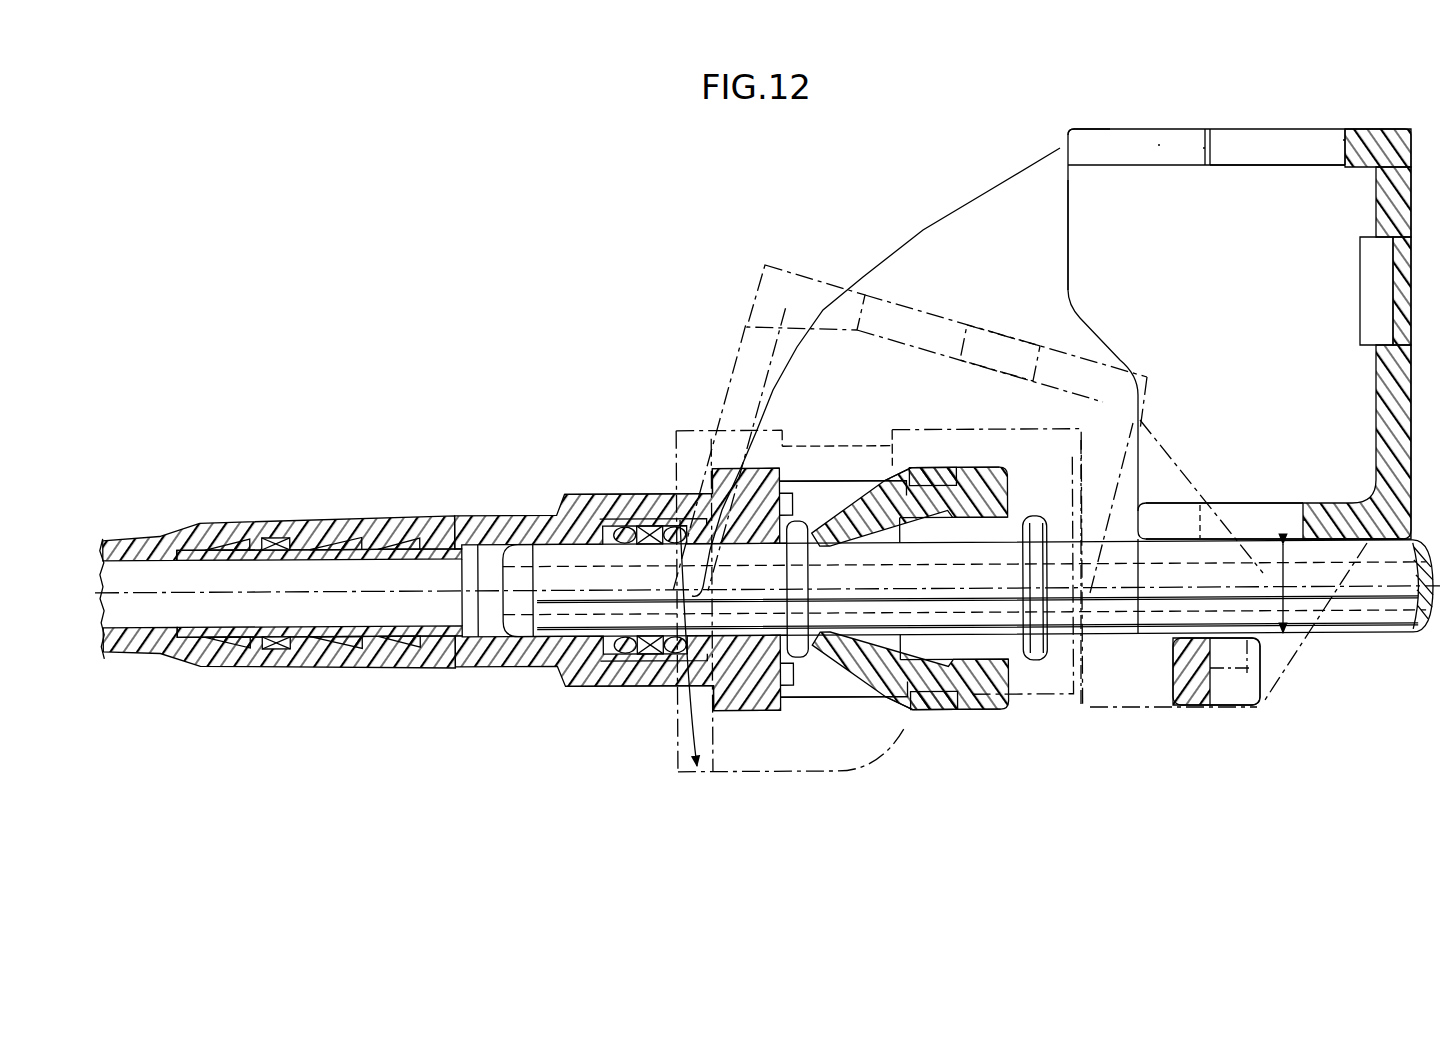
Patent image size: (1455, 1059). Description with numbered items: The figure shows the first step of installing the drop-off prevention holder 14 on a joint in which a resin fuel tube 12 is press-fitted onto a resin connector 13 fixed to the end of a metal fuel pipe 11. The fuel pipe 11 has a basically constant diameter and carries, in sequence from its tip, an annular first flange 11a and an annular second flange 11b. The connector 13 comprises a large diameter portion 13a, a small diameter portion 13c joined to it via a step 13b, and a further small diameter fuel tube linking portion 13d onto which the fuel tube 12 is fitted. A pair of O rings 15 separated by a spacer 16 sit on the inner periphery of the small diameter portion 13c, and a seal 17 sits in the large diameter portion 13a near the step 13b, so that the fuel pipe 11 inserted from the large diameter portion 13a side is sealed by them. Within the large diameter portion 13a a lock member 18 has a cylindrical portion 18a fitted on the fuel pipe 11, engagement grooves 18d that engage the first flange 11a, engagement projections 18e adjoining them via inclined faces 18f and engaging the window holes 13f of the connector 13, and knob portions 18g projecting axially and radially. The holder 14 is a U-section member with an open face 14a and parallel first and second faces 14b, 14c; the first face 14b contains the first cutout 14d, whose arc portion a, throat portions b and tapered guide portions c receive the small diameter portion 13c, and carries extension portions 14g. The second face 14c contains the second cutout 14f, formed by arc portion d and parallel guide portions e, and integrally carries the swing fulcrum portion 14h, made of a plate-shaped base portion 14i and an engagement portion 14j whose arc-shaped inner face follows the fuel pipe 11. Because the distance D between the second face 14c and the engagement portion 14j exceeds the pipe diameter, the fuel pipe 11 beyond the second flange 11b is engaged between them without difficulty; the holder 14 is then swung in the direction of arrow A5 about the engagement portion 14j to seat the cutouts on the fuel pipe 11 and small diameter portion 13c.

The fuel pipe 11 is at (1373, 645).
The first flange 11a is at (797, 450).
The second flange 11b is at (1033, 525).
The fuel tube 12 is at (172, 537).
The connector 13 is at (527, 505).
The large diameter portion 13a is at (758, 468).
The step 13b is at (711, 468).
The small diameter portion 13c is at (620, 495).
The fuel tube linking portion 13d is at (320, 530).
The window hole 13f is at (878, 482).
The drop-off prevention holder 14 is at (1240, 125).
The open face 14a is at (1065, 228).
The first face 14b is at (1272, 128).
The second face 14c is at (1343, 503).
The first cutout 14d is at (1280, 153).
The second cutout 14f is at (1247, 517).
The extension portion 14g is at (1067, 148).
The swing fulcrum portion 14h is at (1193, 712).
The base portion 14i is at (1120, 700).
The engagement portion 14j is at (1230, 687).
The O ring 15 is at (620, 654).
The spacer 16 is at (645, 654).
The seal 17 is at (707, 527).
The lock member 18 is at (985, 455).
The cylindrical portion 18a is at (773, 545).
The engagement groove 18d is at (803, 532).
The engagement projection 18e is at (901, 478).
The inclined face 18f is at (830, 522).
The knob portion 18g is at (993, 468).
The arc portion a is at (1343, 142).
The throat portion b is at (1203, 150).
The guide portion c is at (1160, 146).
The arc portion d is at (1292, 522).
The guide portion e is at (1200, 522).
The distance D is at (1287, 587).
The arrow A5 is at (677, 643).